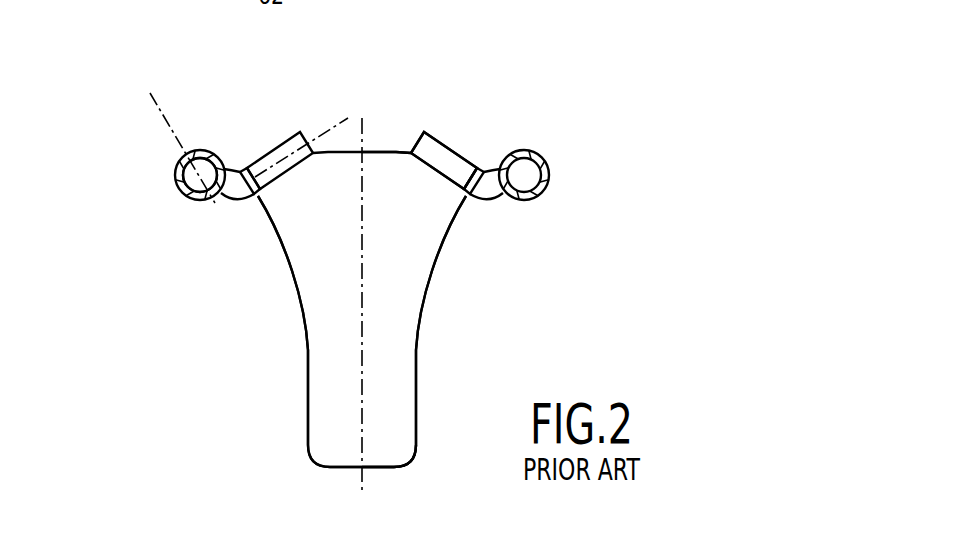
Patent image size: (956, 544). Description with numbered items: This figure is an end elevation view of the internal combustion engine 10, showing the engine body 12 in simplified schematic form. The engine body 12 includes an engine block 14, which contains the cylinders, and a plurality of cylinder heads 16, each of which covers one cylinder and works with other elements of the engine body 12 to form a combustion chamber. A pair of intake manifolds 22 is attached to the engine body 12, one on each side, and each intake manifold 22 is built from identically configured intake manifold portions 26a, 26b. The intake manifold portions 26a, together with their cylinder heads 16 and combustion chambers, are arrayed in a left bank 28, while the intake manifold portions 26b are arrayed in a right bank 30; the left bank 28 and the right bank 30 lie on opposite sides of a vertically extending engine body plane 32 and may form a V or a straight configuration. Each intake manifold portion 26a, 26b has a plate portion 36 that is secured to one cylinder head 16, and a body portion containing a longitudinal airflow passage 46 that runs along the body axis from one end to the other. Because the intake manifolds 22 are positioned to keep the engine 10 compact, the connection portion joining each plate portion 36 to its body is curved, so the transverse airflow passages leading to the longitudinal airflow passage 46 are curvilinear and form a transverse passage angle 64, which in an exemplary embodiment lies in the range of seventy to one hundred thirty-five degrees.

The internal combustion engine 10 is at (606, 99).
The engine body 12 is at (429, 293).
The engine block 14 is at (295, 293).
The cylinder head 16 is at (284, 134).
The intake manifold 22 is at (172, 175).
The intake manifold portion 26a is at (499, 203).
The intake manifold portion 26b is at (228, 202).
The left bank 28 is at (411, 139).
The right bank 30 is at (318, 136).
The engine body plane 32 is at (365, 444).
The plate portion 36 is at (254, 196).
The longitudinal airflow passage 46 is at (190, 182).
The transverse passage angle 64 is at (286, 142).